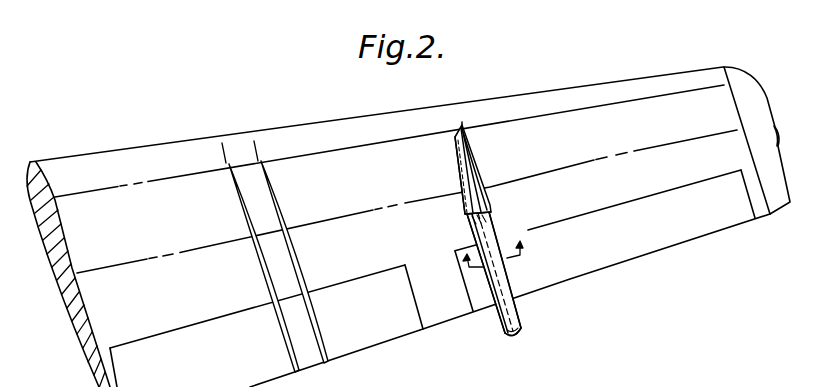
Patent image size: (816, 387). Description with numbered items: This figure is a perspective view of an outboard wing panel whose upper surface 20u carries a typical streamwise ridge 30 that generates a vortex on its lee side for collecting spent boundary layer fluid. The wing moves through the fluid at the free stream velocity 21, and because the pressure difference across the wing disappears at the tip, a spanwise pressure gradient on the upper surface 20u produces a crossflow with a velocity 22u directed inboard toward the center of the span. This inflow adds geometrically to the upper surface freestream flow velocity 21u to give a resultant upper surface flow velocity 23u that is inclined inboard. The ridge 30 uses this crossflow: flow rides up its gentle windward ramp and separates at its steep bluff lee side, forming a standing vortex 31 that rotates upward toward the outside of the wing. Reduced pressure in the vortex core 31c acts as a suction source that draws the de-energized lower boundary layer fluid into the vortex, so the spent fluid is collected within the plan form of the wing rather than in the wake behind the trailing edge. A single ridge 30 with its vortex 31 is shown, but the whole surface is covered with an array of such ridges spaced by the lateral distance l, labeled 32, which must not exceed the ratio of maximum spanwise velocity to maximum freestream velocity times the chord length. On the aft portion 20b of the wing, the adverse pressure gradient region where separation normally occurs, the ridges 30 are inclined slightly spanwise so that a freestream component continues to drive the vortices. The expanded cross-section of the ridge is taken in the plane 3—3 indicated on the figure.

The upper surface 20u is at (691, 129).
The aft portion 20b is at (659, 228).
The free stream velocity 21 is at (195, 15).
The upper surface freestream flow velocity 21u is at (473, 155).
The upper surface crossflow velocity 22u is at (491, 212).
The resultant upper surface flow velocity 23u is at (464, 204).
The ridge 30 is at (507, 261).
The vortex 31 is at (489, 284).
The vortex core 31c is at (506, 325).
The lateral distance between ridges 32 is at (258, 147).
The section plane 3— 3 is at (491, 245).
The lateral distance l is at (198, 154).